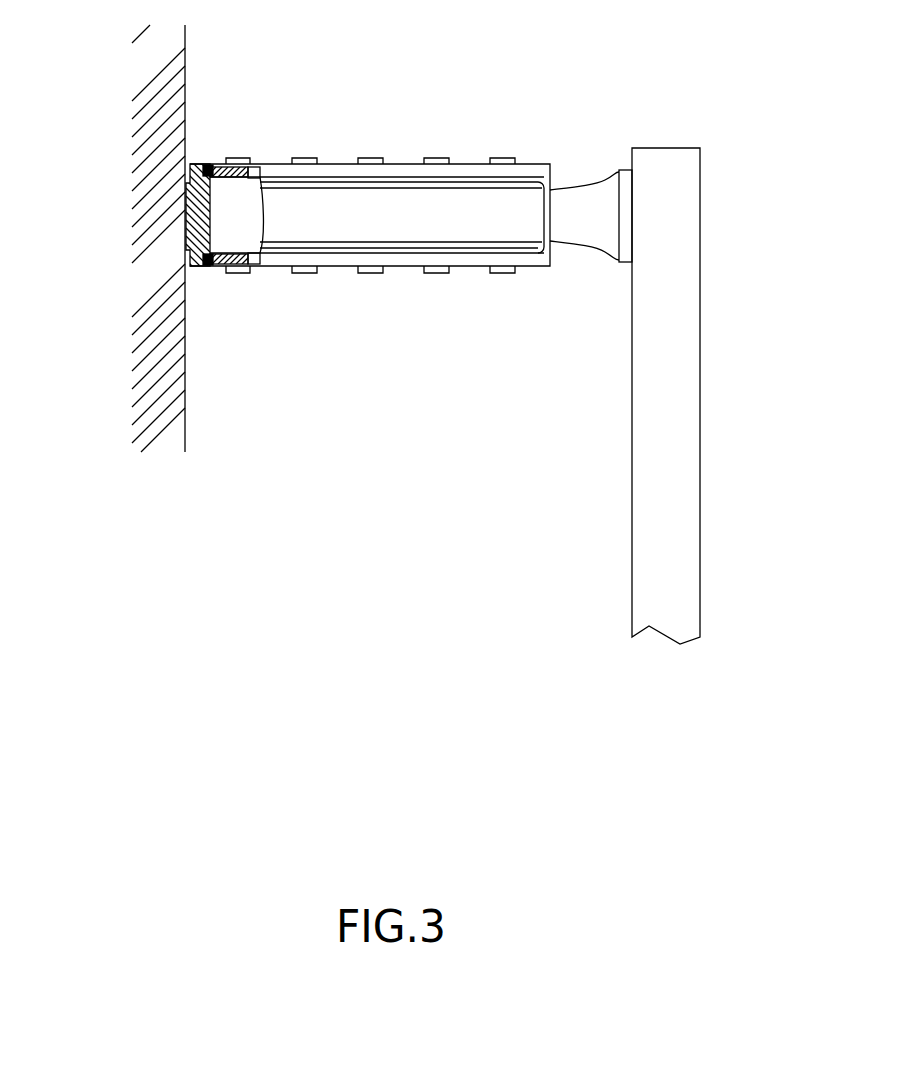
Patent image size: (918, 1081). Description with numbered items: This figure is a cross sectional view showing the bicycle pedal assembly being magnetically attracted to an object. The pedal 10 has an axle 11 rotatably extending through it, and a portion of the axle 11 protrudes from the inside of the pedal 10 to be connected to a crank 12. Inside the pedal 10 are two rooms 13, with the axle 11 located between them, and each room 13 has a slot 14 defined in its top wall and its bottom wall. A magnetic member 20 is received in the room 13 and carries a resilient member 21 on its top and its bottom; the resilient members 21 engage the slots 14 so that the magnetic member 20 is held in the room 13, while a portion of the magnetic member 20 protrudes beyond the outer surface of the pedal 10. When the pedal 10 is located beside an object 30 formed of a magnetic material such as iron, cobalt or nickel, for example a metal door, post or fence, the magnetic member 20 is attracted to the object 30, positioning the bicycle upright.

The pedal 10 is at (412, 162).
The axle 11 is at (593, 195).
The crank 12 is at (690, 368).
The room 13 is at (225, 215).
The slot 14 is at (208, 167).
The magnetic member 20 is at (190, 205).
The resilient member 21 is at (205, 166).
The object 30 is at (177, 397).